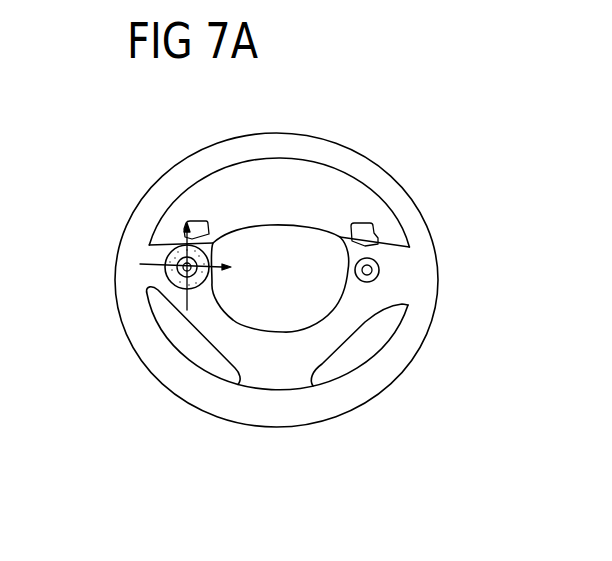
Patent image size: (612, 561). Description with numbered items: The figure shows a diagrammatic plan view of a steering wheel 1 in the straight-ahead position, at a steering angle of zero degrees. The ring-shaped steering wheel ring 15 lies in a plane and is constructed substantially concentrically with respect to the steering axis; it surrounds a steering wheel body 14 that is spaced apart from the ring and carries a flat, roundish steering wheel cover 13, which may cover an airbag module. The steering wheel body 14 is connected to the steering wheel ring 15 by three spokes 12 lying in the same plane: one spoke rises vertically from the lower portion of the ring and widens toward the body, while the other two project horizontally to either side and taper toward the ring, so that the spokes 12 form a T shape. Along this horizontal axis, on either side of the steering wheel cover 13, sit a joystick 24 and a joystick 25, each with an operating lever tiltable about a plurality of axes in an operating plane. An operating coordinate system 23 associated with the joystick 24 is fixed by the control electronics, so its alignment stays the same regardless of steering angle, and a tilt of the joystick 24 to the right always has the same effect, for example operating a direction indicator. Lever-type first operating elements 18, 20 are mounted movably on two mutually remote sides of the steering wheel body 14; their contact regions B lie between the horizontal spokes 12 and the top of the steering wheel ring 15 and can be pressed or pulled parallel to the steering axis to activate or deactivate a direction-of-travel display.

The steering wheel 1 is at (503, 81).
The spokes 12 is at (165, 284).
The steering wheel cover 13 is at (278, 308).
The steering wheel body 14 is at (268, 222).
The steering wheel ring 15 is at (400, 200).
The first operating element 18 is at (200, 227).
The first operating element 20 is at (365, 233).
The operating coordinate system 23 is at (178, 293).
The joystick 24 is at (172, 252).
The joystick 25 is at (378, 266).
The contact region B is at (188, 228).